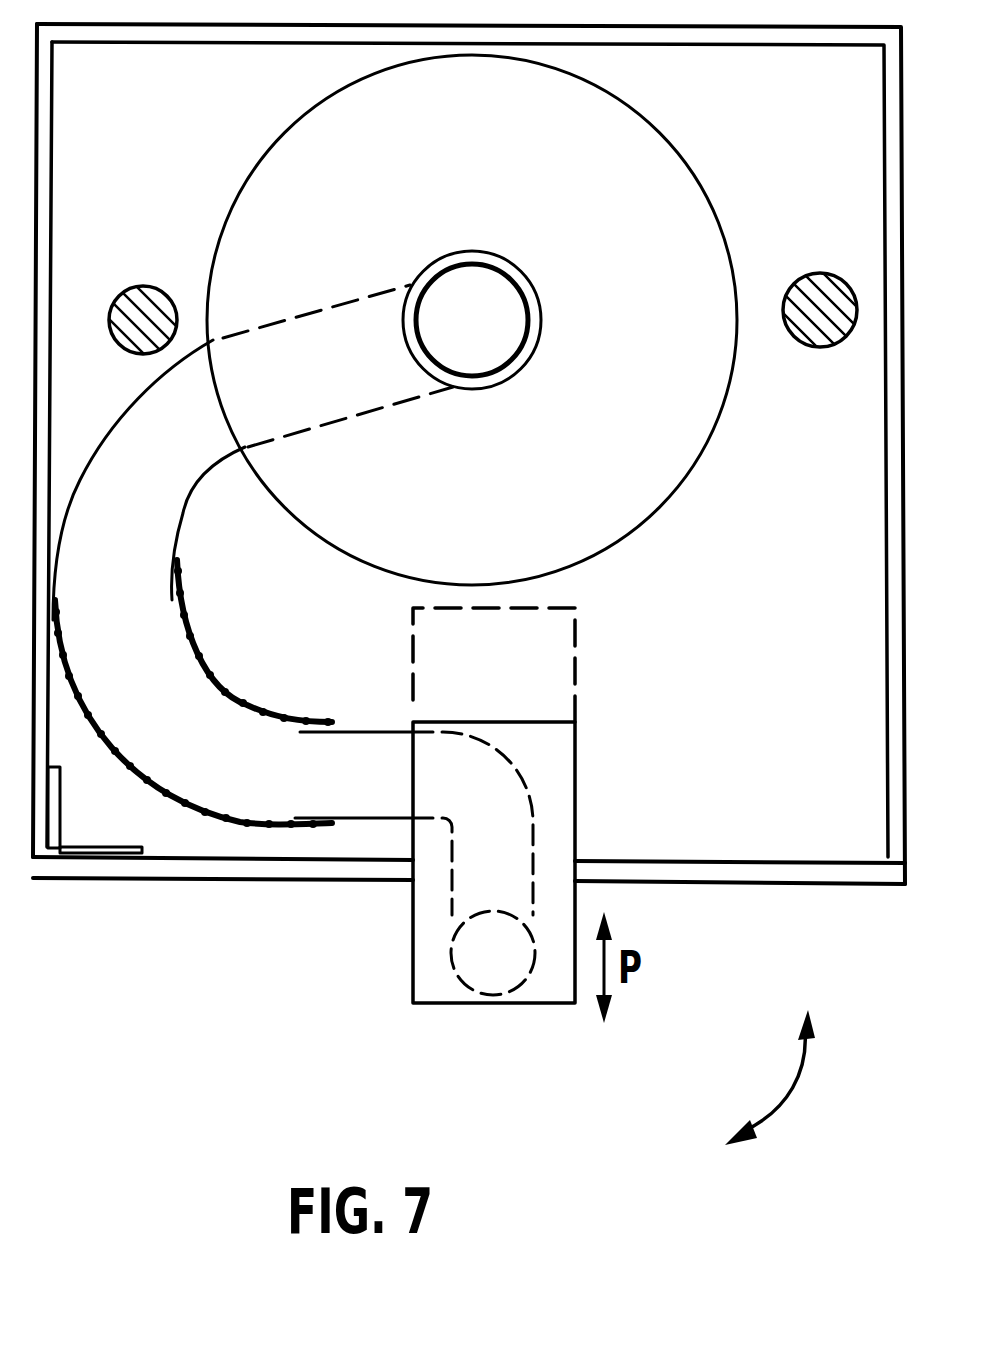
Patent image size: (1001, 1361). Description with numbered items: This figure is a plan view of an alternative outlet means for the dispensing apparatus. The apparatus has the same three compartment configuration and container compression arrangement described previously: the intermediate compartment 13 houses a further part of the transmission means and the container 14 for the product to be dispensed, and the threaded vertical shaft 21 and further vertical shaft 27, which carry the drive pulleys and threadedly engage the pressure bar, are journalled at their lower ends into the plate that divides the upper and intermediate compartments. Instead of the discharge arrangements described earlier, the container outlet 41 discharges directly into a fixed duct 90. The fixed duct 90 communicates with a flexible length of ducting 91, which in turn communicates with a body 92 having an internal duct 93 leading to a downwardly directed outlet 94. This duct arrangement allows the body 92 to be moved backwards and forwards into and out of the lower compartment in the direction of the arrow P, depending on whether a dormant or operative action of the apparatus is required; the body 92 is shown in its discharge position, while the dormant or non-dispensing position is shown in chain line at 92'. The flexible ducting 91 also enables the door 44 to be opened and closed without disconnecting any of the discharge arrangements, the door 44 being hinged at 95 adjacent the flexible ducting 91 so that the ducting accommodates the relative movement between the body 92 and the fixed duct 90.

The intermediate compartment 13 is at (688, 45).
The container 14 is at (653, 517).
The vertical shaft 21 is at (823, 347).
The further vertical shaft 27 is at (122, 293).
The container outlet 41 is at (502, 335).
The door 44 is at (713, 877).
The fixed duct 90 is at (183, 513).
The flexible ducting 91 is at (210, 670).
The body 92 is at (482, 856).
The body in dormant position 92' is at (565, 665).
The internal duct 93 is at (538, 818).
The downwardly directed outlet 94 is at (535, 1000).
The hinge 95 is at (62, 843).